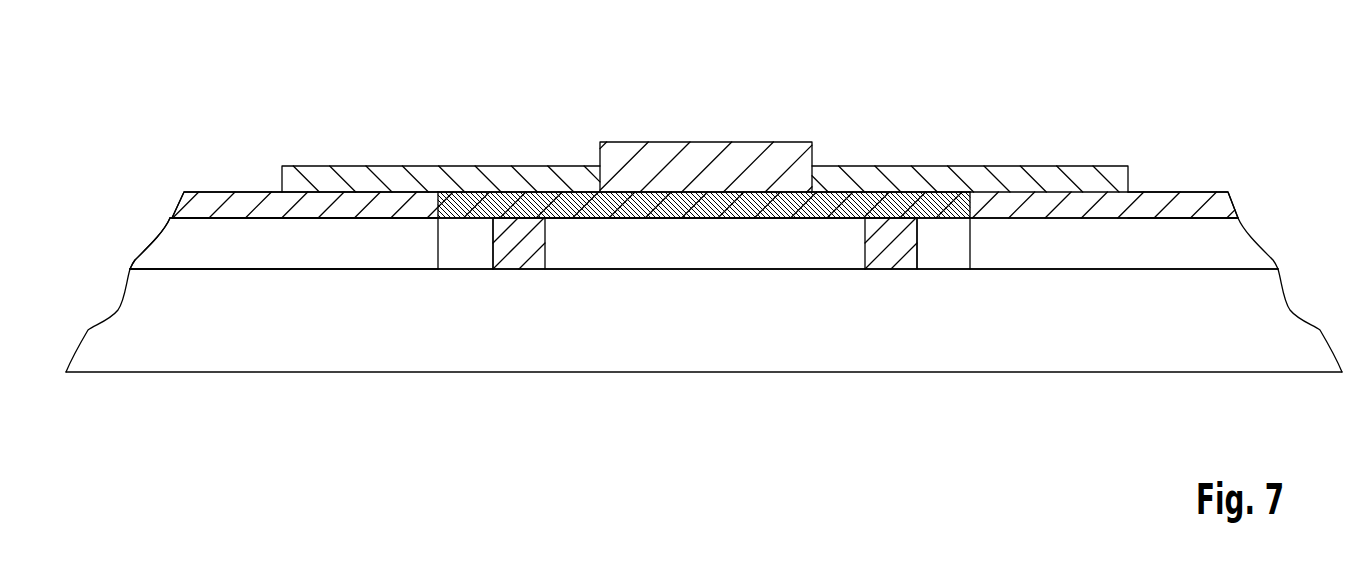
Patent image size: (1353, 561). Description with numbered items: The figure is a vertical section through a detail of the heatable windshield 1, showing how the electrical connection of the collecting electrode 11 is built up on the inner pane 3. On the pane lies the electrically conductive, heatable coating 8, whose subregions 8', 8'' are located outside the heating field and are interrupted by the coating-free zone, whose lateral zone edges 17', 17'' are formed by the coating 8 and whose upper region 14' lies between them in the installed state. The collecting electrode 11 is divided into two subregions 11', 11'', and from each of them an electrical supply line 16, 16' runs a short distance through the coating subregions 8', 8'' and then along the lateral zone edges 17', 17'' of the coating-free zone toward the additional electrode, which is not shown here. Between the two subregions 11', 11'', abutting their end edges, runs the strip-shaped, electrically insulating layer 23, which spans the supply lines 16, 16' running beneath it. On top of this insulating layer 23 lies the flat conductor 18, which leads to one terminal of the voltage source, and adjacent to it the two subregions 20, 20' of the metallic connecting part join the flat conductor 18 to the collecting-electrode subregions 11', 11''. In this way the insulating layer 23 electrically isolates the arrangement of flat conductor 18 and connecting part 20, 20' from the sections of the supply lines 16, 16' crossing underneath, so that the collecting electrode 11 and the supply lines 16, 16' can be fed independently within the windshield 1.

The windshield 1 is at (1258, 123).
The inner pane 3 is at (675, 322).
The coating 8 is at (284, 348).
The subregion of the coating outside the heating field 8' is at (284, 243).
The subregion of the coating outside the heating field 8'' is at (1124, 348).
The collecting electrode 11 is at (705, 143).
The subregion of the collecting electrode 11' is at (305, 205).
The subregion of the collecting electrode 11'' is at (1183, 143).
The upper region of the coating-free zone 14' is at (705, 348).
The electrical supply line 16 is at (519, 348).
The electrical supply line 16' is at (891, 348).
The lateral zone edge of the coating-free zone 17' is at (465, 335).
The lateral zone edge of the coating-free zone 17'' is at (943, 335).
The flat conductor 18 is at (692, 167).
The connecting part 20 is at (441, 130).
The connecting part 20' is at (970, 130).
The electrically insulating layer 23 is at (862, 193).